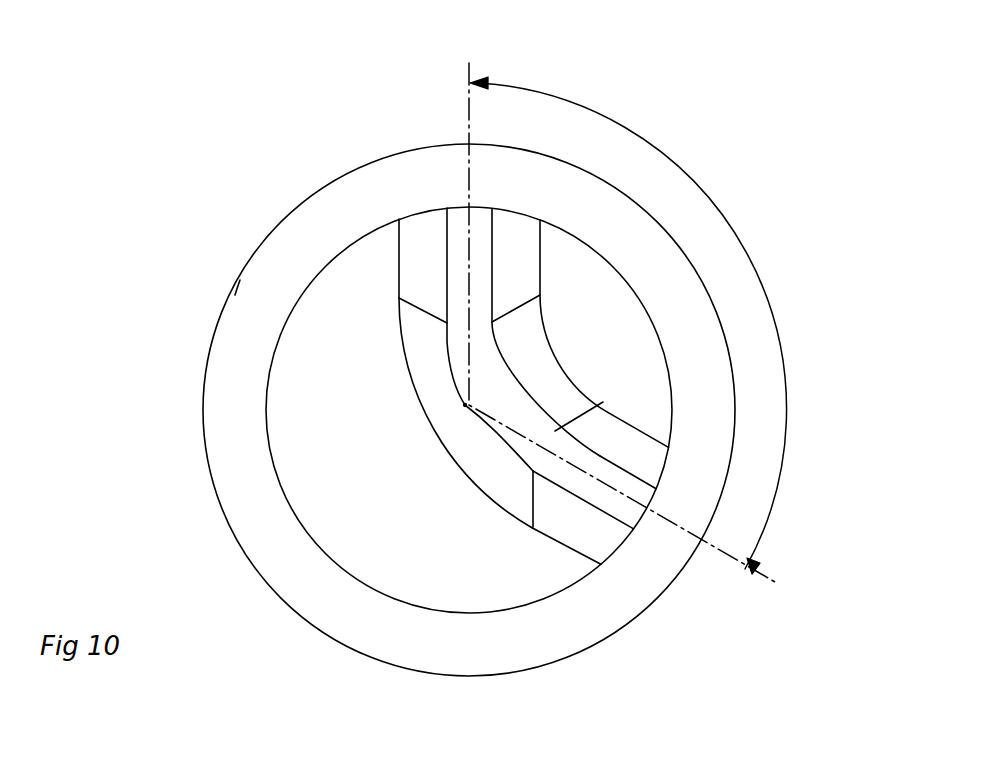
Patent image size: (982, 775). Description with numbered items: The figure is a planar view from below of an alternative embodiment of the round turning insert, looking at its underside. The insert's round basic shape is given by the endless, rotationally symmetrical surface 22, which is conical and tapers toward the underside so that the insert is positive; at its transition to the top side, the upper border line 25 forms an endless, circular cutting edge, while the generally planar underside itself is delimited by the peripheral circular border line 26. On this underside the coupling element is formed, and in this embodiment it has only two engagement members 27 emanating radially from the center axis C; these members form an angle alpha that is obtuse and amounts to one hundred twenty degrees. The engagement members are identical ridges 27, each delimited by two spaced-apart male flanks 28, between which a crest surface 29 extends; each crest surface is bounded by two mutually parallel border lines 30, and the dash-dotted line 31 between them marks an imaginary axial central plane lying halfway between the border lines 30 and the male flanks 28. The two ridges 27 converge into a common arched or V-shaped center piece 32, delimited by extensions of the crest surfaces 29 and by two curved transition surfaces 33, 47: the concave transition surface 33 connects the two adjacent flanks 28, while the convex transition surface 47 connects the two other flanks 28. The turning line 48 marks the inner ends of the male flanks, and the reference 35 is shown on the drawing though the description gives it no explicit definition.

The rotationally symmetrical surface 22 is at (217, 380).
The upper border line 25 is at (230, 293).
The circular border line 26 is at (320, 273).
The engagement member 27 is at (452, 197).
The male flank 28 is at (643, 443).
The crest surface 29 is at (633, 487).
The border line 30 is at (623, 469).
The central plane 31 is at (562, 463).
The center piece 32 is at (460, 350).
The concave transition surface 33 is at (537, 323).
The vertical channel 35 is at (478, 207).
The convex transition surface 47 is at (442, 433).
The turning line 48 is at (583, 412).
The center axis C is at (467, 405).
The angle alpha is at (628, 325).